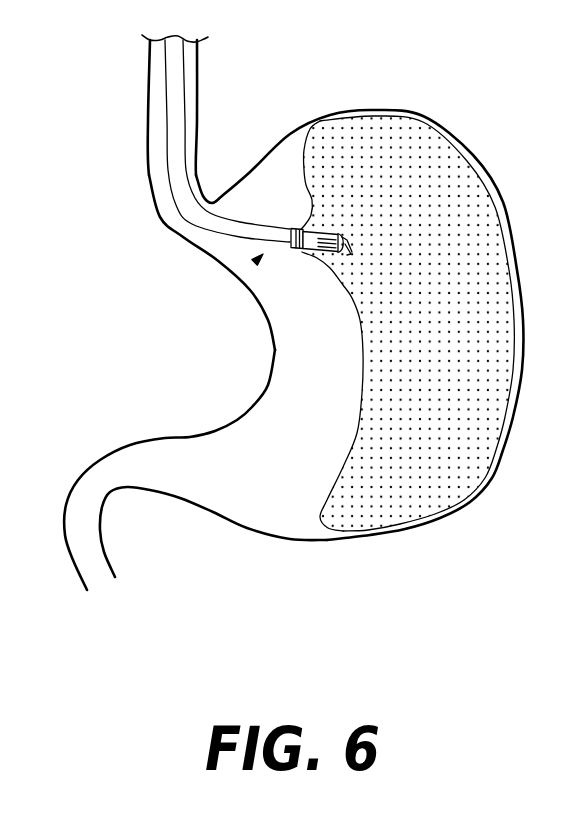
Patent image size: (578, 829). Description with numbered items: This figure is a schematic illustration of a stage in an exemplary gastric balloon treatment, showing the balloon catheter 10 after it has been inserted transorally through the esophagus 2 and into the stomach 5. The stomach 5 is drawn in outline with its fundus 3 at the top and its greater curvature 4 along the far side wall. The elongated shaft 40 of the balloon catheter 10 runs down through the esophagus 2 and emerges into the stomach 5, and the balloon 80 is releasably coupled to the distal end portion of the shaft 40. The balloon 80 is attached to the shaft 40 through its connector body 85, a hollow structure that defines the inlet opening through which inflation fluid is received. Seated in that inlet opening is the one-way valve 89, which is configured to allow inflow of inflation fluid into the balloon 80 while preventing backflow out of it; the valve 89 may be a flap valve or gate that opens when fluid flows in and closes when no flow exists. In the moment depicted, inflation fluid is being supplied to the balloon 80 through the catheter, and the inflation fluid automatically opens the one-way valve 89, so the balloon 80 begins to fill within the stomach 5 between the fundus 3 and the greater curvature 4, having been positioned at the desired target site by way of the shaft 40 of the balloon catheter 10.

The esophagus 2 is at (188, 138).
The fundus 3 is at (376, 110).
The greater curvature 4 is at (510, 433).
The stomach 5 is at (332, 450).
The balloon catheter 10 is at (256, 263).
The elongated shaft 40 is at (193, 210).
The balloon 80 is at (382, 173).
The connector body 85 is at (313, 240).
The one-way valve 89 is at (352, 240).